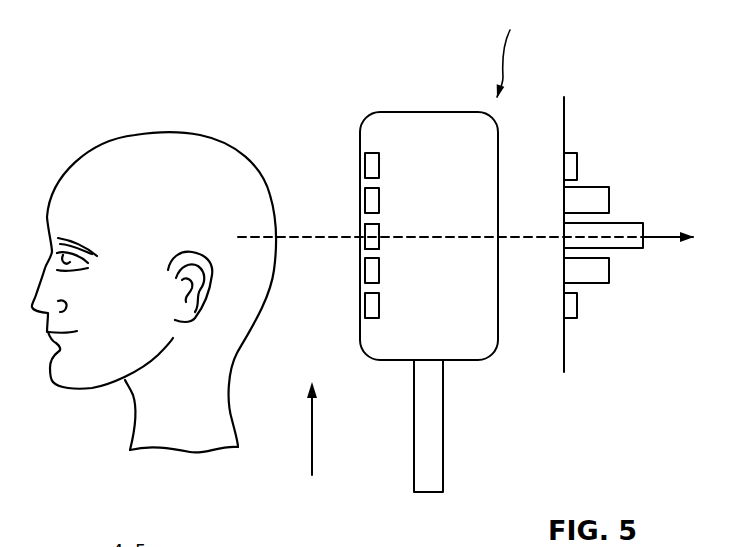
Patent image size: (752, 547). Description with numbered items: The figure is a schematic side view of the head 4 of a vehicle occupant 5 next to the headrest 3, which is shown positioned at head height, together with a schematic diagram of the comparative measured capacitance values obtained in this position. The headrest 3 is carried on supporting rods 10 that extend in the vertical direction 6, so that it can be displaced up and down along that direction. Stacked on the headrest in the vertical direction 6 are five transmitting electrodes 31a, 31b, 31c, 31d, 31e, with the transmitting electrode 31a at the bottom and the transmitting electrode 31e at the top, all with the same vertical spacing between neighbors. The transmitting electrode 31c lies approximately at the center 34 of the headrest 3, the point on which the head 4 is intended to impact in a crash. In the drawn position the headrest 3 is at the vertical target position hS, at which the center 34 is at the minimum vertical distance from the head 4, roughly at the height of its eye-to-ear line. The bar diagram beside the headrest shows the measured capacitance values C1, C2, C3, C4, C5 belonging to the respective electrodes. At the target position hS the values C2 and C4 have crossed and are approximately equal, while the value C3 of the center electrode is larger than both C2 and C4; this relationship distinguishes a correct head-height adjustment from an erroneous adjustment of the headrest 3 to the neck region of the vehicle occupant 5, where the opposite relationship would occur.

The head 4 is at (154, 244).
The vehicle occupant 5 is at (173, 133).
The headrest 3 is at (438, 112).
The supporting rods 10 is at (443, 438).
The center of the headrest 34 is at (360, 237).
The transmitting electrode 31a is at (379, 303).
The transmitting electrode 31b is at (379, 270).
The transmitting electrode 31c is at (379, 232).
The transmitting electrode 31d is at (379, 203).
The transmitting electrode 31e is at (379, 168).
The vertical target position hS is at (516, 54).
The vertical direction 6 is at (312, 432).
The measured capacitance value C1 is at (577, 302).
The measured capacitance value C2 is at (609, 270).
The measured capacitance value C3 is at (643, 223).
The measured capacitance value C4 is at (613, 200).
The measured capacitance value C5 is at (577, 165).